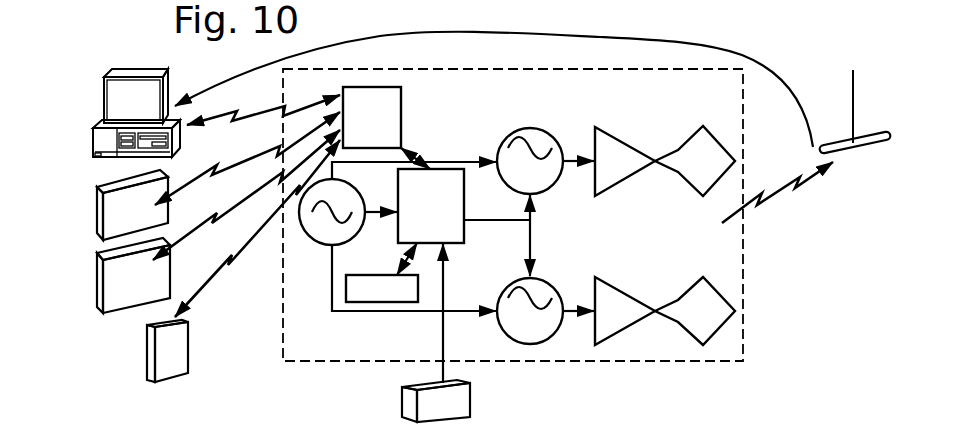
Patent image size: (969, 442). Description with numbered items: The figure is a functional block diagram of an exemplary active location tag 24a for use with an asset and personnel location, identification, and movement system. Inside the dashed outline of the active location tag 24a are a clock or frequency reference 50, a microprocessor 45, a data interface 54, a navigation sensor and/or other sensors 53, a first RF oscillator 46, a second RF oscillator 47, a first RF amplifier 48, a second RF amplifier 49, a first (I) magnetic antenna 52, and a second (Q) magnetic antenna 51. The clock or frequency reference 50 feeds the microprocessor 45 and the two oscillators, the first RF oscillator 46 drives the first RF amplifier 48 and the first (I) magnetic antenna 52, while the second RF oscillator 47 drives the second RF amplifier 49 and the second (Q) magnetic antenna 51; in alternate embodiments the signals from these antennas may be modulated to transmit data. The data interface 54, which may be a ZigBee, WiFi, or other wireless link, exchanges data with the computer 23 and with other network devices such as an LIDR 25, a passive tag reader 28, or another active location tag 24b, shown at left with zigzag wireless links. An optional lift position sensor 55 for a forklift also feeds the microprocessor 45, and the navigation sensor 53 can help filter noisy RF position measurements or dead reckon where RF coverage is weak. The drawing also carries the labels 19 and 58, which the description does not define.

The antenna 19 is at (857, 152).
The computer 23 is at (108, 78).
The active location tag 24a is at (747, 285).
The another active location tag 24b is at (188, 373).
The LIDR 25 is at (168, 217).
The passive tag reader 28 is at (170, 270).
The microprocessor 45 is at (419, 239).
The first RF oscillator 46 is at (533, 127).
The second RF oscillator 47 is at (527, 344).
The first RF amplifier 48 is at (620, 137).
The second RF amplifier 49 is at (632, 327).
The clock or frequency reference 50 is at (325, 247).
The second (Q) magnetic antenna 51 is at (723, 325).
The first (I) magnetic antenna 52 is at (703, 126).
The navigation sensor 53 is at (383, 302).
The data interface 54 is at (401, 100).
The lift position sensor 55 is at (400, 398).
The transmitter system 58 is at (589, 430).